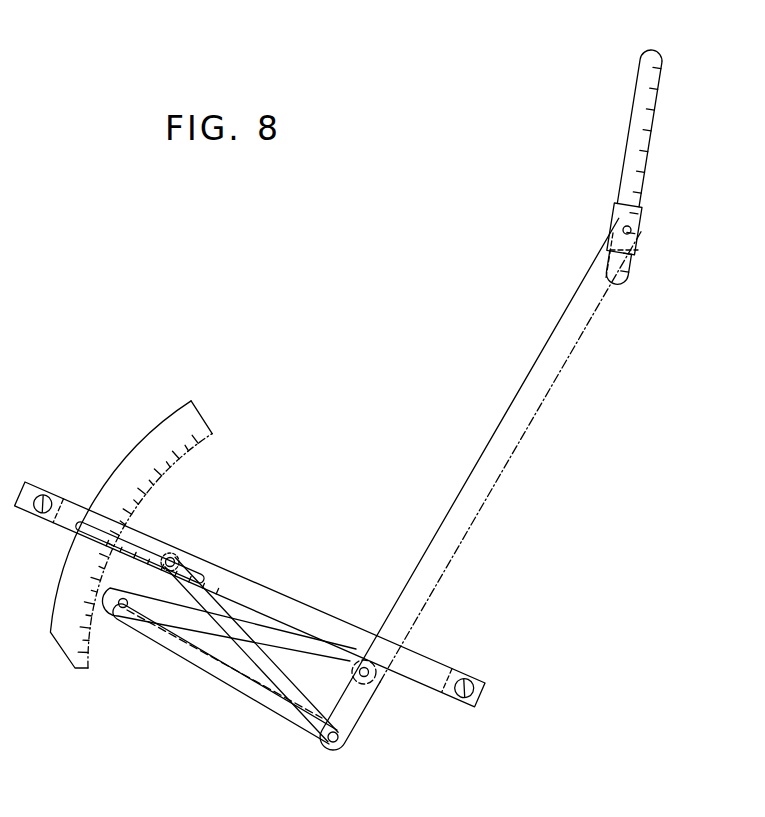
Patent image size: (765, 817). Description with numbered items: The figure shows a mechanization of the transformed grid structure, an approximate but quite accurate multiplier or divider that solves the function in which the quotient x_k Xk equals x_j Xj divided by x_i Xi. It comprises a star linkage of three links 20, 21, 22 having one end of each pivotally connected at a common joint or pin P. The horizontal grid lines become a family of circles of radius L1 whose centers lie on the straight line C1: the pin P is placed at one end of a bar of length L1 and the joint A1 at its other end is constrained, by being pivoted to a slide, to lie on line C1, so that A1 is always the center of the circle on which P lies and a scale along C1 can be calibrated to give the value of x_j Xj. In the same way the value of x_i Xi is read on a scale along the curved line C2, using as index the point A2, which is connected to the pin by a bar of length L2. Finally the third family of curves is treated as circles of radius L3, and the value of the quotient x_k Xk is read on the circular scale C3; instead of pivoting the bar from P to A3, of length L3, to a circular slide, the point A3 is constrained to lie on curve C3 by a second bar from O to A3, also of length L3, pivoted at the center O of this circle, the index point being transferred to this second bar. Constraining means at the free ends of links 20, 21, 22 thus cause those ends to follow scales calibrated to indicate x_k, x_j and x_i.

The link 20 is at (139, 555).
The link 21 is at (183, 657).
The link 22 is at (557, 382).
The straight line (scale) C1 is at (652, 50).
The curved line (scale) C2 is at (78, 502).
The circular scale C3 is at (174, 414).
The joint A1 is at (615, 224).
The index point A2 is at (178, 553).
The point (joint) A3 is at (121, 609).
The bar length (radius of first family of circles) L1 is at (478, 460).
The bar length (radius of second family of circles) L2 is at (292, 716).
The bar length (radius of third family of curves) L3 is at (302, 662).
The pivot at center of circle C3 O is at (374, 690).
The joint (pin) P is at (337, 745).
The divisor value x_i Xi is at (213, 567).
The dividend value x_j Xj is at (683, 175).
The quotient value x_k Xk is at (163, 476).